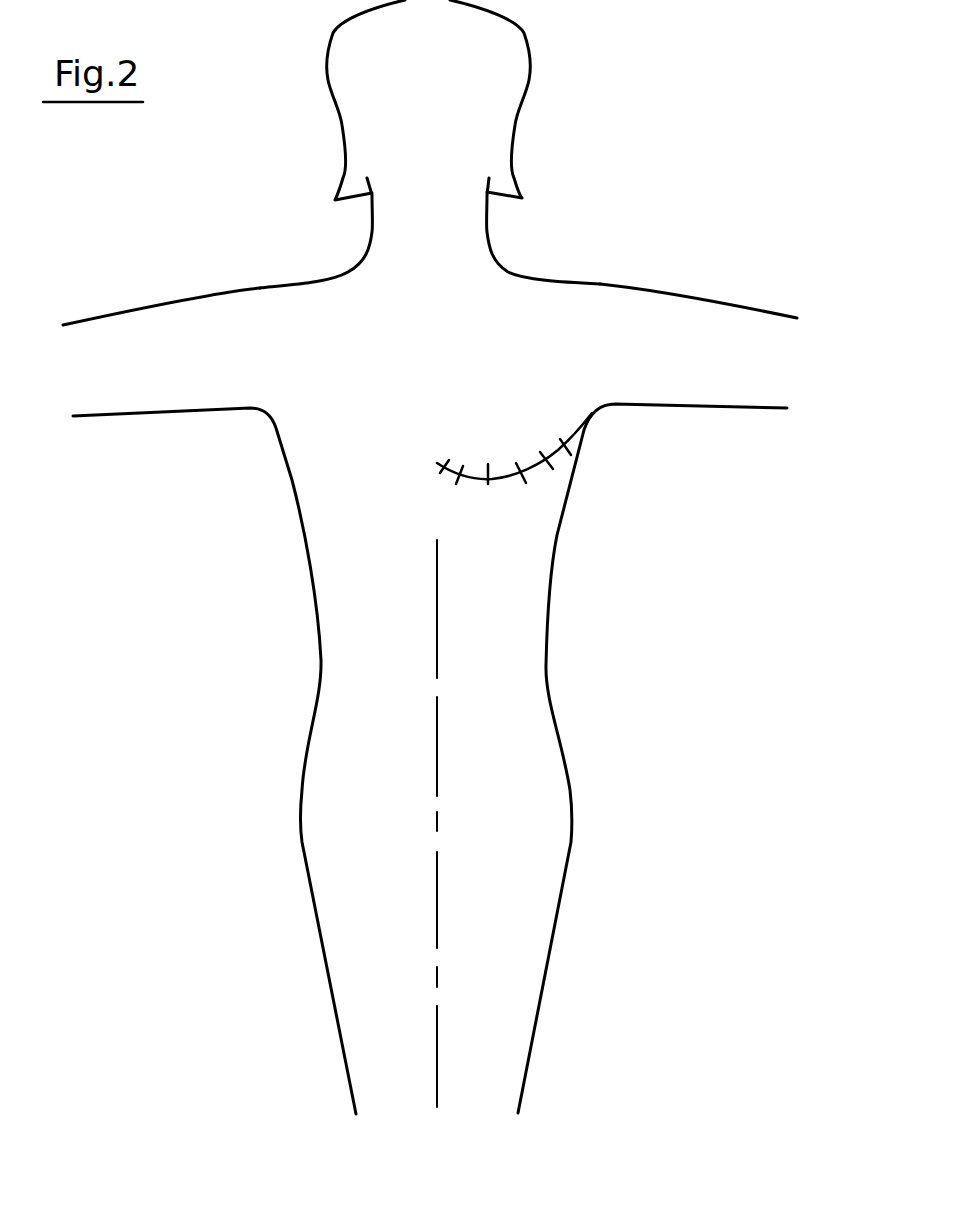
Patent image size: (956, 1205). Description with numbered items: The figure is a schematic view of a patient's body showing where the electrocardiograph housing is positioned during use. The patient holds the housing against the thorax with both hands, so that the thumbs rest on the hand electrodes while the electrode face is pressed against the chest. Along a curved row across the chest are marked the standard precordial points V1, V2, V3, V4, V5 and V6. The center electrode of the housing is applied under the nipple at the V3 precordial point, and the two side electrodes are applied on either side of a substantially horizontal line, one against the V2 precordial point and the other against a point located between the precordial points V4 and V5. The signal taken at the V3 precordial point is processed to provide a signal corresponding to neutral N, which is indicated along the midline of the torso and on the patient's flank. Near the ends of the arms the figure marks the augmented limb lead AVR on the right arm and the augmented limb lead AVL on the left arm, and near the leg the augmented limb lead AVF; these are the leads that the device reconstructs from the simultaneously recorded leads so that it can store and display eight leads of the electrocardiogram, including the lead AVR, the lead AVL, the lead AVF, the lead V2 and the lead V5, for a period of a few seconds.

The aVR lead AVR is at (161, 300).
The aVL lead AVL is at (698, 296).
The aVF lead AVF is at (567, 1093).
The neutral N is at (488, 823).
The V1 precordial point V1 is at (430, 463).
The V2 precordial point V2 is at (447, 488).
The V3 precordial point V3 is at (492, 488).
The V4 precordial point V4 is at (525, 485).
The V5 precordial point V5 is at (554, 474).
The V6 precordial point V6 is at (565, 435).